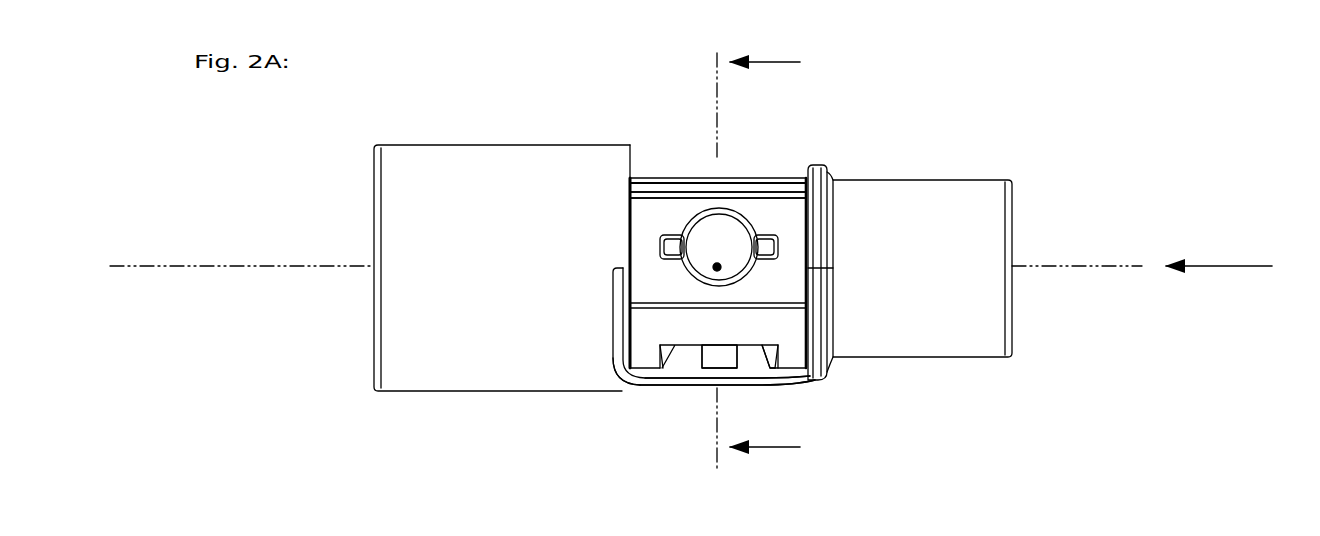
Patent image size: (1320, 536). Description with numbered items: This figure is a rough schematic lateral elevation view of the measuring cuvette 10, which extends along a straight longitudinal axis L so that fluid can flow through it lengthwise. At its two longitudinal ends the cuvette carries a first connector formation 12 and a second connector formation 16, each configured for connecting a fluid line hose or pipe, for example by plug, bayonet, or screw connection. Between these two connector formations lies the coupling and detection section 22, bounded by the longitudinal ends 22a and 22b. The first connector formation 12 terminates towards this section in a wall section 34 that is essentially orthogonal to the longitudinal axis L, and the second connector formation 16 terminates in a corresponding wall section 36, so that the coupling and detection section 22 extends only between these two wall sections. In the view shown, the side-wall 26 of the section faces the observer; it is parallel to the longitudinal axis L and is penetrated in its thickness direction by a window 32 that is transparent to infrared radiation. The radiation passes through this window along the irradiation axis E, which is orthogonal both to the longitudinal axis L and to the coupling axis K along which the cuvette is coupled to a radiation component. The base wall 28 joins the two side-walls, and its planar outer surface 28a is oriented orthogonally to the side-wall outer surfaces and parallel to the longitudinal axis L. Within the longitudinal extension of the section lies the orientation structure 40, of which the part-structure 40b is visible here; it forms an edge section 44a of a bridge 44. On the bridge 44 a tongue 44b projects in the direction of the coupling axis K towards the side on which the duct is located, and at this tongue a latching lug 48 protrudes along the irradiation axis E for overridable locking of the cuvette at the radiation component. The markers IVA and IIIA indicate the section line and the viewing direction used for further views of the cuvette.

The measuring cuvette 10 is at (393, 112).
The first connector formation 12 is at (494, 187).
The second connector formation 16 is at (932, 216).
The coupling and detection section 22 is at (739, 220).
The longitudinal end of coupling and detection section 22a is at (632, 160).
The longitudinal end of coupling and detection section 22b is at (802, 162).
The side-wall 26 is at (718, 288).
The base wall 28 is at (684, 184).
The outer surface of base wall 28a is at (760, 172).
The window 32 is at (719, 247).
The wall section 34 is at (622, 383).
The wall section 36 is at (822, 167).
The orientation structure 40 is at (745, 361).
The part-structure 40b is at (755, 370).
The bridge 44 is at (707, 345).
The edge section of bridge 44a is at (800, 402).
The tongue 44b is at (746, 356).
The latching lug 48 is at (713, 356).
The irradiation axis E is at (716, 267).
The coupling axis K is at (715, 77).
The longitudinal axis L is at (135, 268).
The section line IVA is at (788, 63).
The view direction IIIA is at (1223, 267).